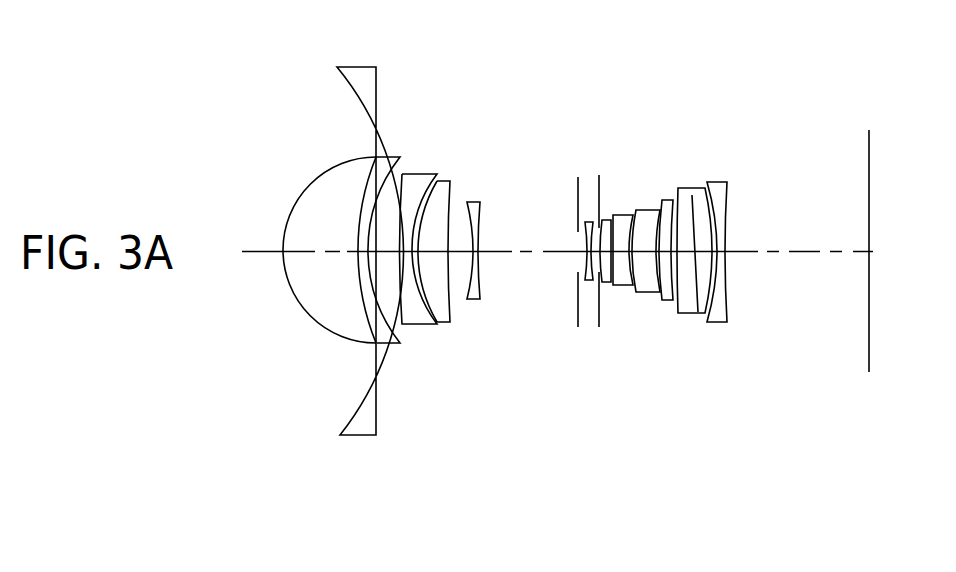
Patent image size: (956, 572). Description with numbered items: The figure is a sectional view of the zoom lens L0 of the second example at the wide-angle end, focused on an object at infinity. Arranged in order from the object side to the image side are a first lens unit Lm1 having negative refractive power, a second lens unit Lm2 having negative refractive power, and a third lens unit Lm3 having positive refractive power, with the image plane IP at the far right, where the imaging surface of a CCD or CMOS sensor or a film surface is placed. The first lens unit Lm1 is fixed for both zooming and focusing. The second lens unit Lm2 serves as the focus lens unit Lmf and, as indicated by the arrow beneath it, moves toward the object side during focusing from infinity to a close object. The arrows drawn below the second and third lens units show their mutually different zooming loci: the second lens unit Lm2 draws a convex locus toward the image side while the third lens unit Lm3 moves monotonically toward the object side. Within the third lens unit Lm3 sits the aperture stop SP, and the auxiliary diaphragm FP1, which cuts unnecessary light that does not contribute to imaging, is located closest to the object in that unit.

The zoom lens L0 is at (882, 80).
The first lens unit Lm1 is at (365, 520).
The focus lens unit Lmf is at (445, 358).
The second lens unit Lm2 is at (477, 534).
The auxiliary diaphragm FP1 is at (576, 198).
The aperture stop SP is at (600, 191).
The third lens unit Lm3 is at (650, 524).
The image plane IP is at (867, 233).